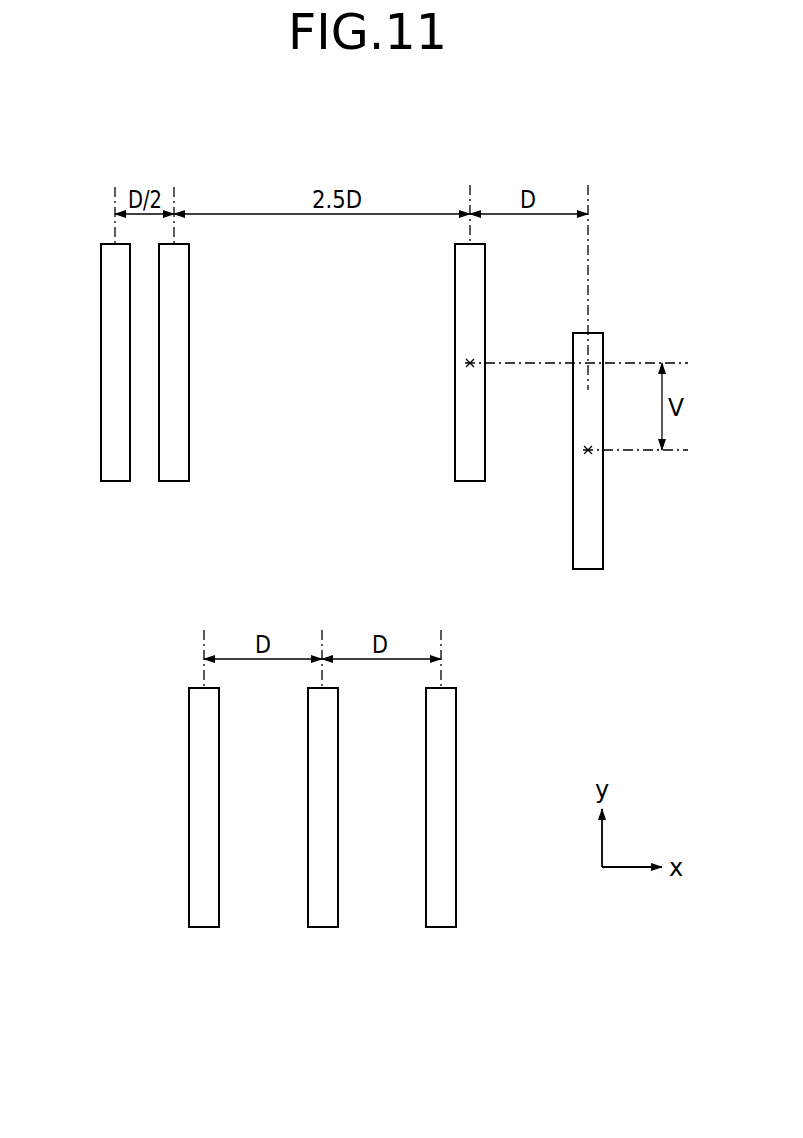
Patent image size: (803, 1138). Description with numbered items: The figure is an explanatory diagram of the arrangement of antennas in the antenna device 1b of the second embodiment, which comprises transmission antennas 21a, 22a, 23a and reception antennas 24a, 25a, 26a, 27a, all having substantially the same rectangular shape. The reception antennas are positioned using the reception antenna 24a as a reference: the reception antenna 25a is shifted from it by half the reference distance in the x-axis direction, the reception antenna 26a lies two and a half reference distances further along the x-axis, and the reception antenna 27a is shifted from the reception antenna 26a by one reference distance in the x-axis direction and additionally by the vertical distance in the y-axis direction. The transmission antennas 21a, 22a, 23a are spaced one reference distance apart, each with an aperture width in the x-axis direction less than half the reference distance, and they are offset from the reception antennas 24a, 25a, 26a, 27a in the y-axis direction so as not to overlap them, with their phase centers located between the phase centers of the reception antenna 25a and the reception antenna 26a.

The electrode arrangement 1b is at (678, 170).
The transmission antenna 21a is at (204, 719).
The transmission antenna 22a is at (322, 719).
The transmission antenna 23a is at (441, 719).
The reception antenna 24a is at (118, 274).
The reception antenna 25a is at (176, 274).
The reception antenna 26a is at (470, 274).
The reception antenna 27a is at (587, 536).